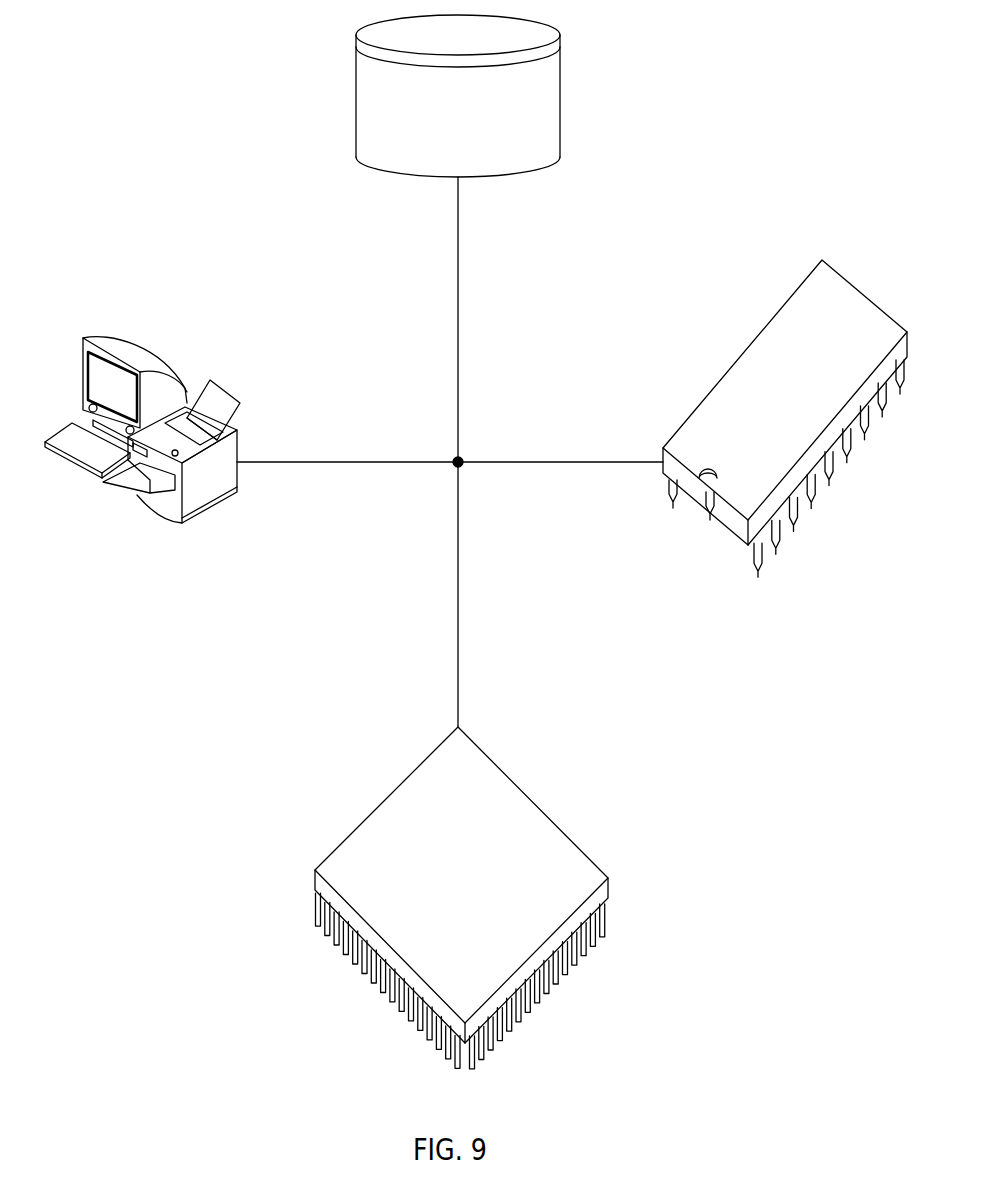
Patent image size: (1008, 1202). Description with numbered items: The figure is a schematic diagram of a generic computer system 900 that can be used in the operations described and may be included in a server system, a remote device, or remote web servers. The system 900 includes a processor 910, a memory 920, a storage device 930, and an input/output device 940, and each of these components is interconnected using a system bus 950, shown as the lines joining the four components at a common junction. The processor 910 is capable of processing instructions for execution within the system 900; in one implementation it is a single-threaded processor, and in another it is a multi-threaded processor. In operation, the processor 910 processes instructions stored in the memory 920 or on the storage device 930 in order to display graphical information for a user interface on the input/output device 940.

The system 900 is at (166, 920).
The processor 910 is at (387, 798).
The memory 920 is at (740, 353).
The storage device 930 is at (357, 95).
The input/output device 940 is at (83, 338).
The system bus 950 is at (358, 461).